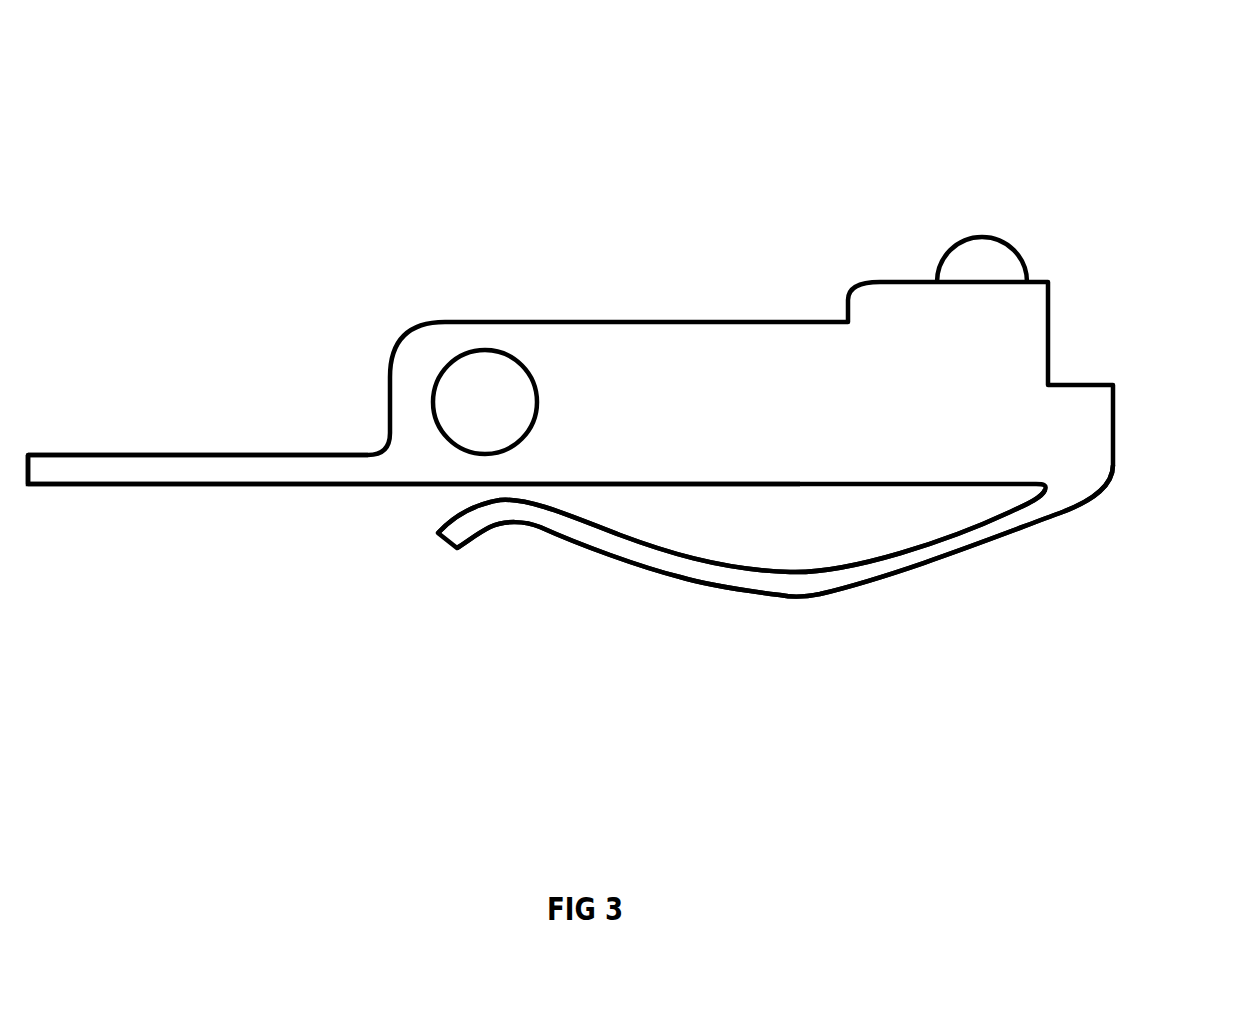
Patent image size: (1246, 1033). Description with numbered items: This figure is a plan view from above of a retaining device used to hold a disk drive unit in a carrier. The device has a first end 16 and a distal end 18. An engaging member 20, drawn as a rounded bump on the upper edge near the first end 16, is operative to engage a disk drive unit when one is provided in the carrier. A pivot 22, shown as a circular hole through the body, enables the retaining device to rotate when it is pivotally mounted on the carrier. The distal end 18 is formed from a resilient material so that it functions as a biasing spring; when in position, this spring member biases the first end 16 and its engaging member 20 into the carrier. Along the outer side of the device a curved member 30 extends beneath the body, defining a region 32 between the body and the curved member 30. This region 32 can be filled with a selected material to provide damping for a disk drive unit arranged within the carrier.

The first end 16 is at (1150, 500).
The distal end 18 is at (260, 540).
The engaging member 20 is at (978, 232).
The pivot 22 is at (458, 393).
The curved member 30 is at (830, 600).
The region 32 is at (691, 540).